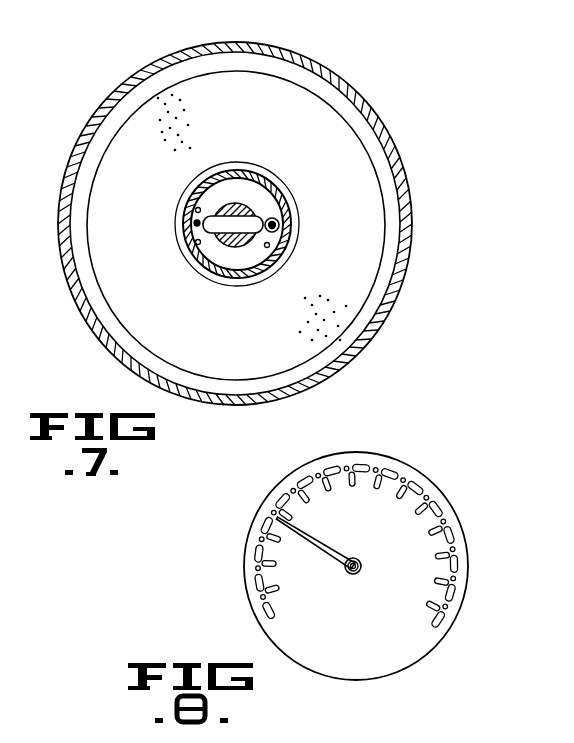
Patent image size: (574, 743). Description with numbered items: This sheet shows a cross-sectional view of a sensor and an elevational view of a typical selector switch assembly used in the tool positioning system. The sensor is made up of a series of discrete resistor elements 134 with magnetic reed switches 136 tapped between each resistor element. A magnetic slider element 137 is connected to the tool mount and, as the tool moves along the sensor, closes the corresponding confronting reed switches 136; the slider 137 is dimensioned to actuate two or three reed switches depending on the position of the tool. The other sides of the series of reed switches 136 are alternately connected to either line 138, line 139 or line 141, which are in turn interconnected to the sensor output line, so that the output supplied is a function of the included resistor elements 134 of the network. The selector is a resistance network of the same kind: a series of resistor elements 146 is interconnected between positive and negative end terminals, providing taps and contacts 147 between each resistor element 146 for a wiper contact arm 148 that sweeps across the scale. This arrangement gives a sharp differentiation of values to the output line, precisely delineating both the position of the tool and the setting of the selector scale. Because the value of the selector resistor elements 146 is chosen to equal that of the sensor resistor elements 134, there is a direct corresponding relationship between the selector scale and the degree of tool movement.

In FIG. 7, the resistor elements 134 is at (280, 207).
In FIG. 7, the magnetic reed switches 136 is at (243, 219).
In FIG. 7, the magnetic slider element 137 is at (348, 132).
In FIG. 7, the line 138 is at (198, 210).
In FIG. 7, the line 139 is at (197, 223).
In FIG. 7, the line 141 is at (198, 242).
In FIG. 8, the resistor elements 146 is at (253, 556).
In FIG. 8, the taps and contacts 147 is at (340, 483).
In FIG. 8, the wiper contact arm 148 is at (337, 551).